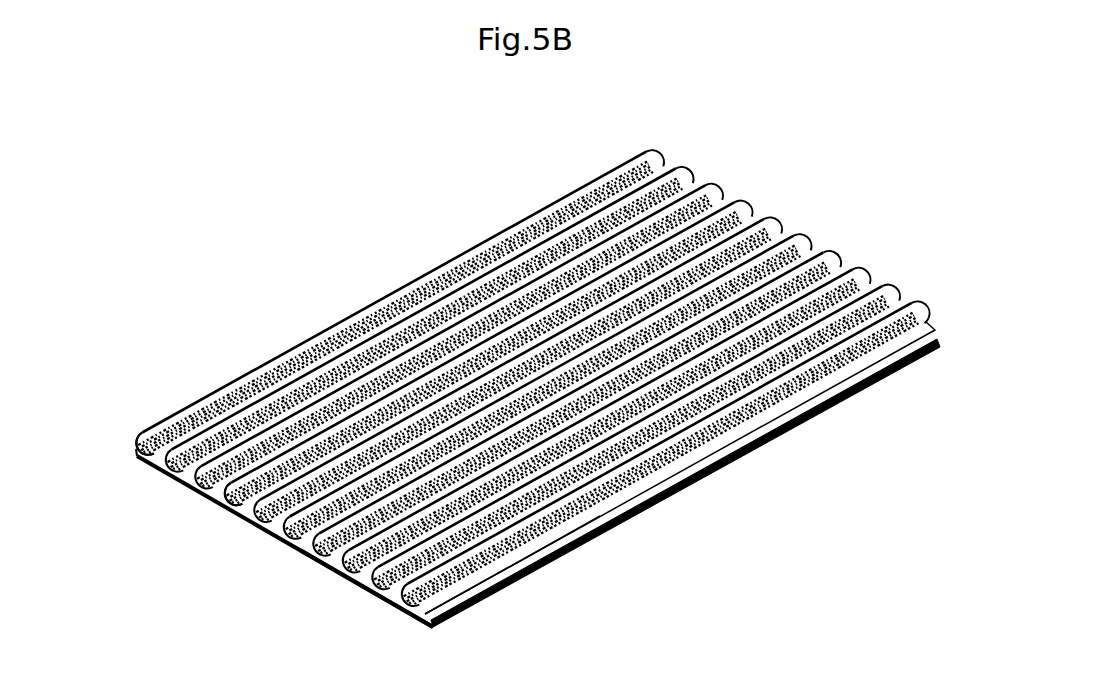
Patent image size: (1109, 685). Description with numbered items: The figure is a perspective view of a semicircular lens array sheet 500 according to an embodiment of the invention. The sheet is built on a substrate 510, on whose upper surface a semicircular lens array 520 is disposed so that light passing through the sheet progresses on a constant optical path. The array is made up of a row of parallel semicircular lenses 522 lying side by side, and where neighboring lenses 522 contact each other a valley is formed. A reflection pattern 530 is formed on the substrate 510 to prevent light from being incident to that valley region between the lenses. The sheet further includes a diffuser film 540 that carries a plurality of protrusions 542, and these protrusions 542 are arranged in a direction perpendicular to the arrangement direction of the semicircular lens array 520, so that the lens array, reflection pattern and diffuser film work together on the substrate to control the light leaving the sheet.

The semicircular lens array sheet 500 is at (778, 186).
The substrate 510 is at (470, 605).
The semicircular lens array 520 is at (927, 303).
The semicircular lens 522 is at (841, 258).
The reflection pattern 530 is at (140, 457).
The diffuser film 540 is at (235, 512).
The protrusion 542 is at (337, 572).